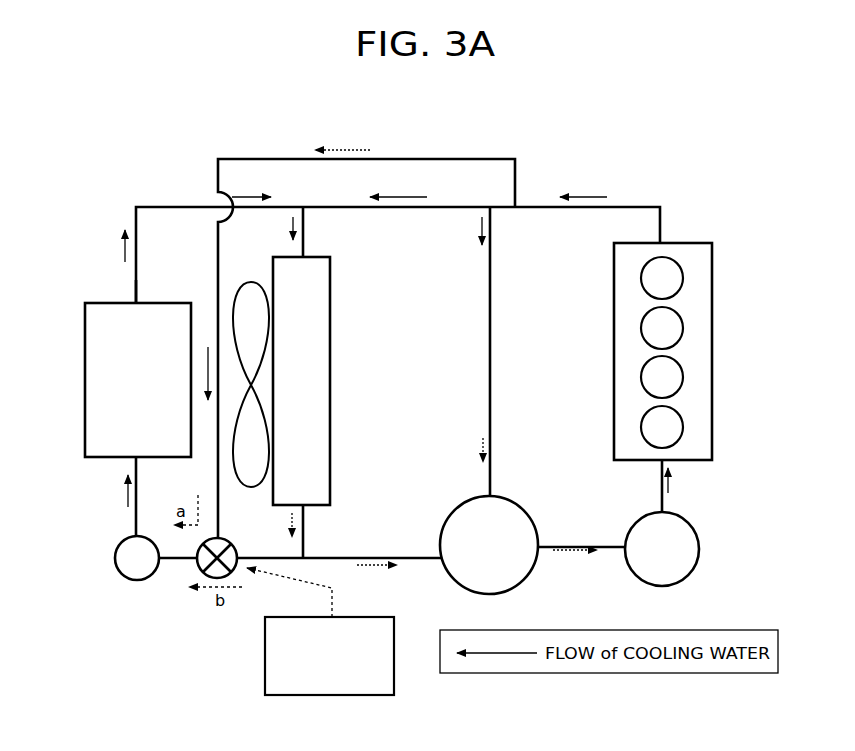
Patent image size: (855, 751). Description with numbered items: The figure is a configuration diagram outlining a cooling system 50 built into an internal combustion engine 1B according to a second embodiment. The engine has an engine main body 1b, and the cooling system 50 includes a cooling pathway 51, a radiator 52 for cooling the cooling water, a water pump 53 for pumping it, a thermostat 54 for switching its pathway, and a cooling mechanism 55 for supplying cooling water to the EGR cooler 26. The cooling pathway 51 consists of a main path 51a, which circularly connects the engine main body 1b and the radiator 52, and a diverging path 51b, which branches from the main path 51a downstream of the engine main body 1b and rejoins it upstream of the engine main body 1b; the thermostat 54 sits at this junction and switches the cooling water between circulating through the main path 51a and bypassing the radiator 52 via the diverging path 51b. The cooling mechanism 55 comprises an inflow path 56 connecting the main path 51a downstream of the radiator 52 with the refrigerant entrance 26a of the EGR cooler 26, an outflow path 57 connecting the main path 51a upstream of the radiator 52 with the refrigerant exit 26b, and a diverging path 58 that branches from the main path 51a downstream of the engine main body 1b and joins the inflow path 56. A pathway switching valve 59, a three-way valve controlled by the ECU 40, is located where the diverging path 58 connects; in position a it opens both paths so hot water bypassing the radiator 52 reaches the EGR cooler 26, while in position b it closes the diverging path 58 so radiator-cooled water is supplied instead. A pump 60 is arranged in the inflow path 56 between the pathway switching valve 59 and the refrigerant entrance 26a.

The internal combustion engine 1B is at (663, 345).
The engine main body 1b is at (716, 327).
The EGR cooler 26 is at (85, 371).
The refrigerant entrance 26a is at (130, 458).
The refrigerant exit 26b is at (135, 299).
The ECU 40 is at (265, 655).
The cooling system 50 is at (143, 190).
The cooling pathway 51 is at (537, 205).
The main path 51a is at (661, 214).
The diverging path 51b is at (491, 326).
The radiator 52 is at (331, 352).
The water pump 53 is at (698, 574).
The thermostat 54 is at (470, 512).
The cooling mechanism 55 is at (105, 273).
The inflow path 56 is at (180, 562).
The outflow path 57 is at (177, 205).
The diverging path 58 is at (215, 261).
The pathway switching valve 59 is at (229, 545).
The pump 60 is at (116, 555).